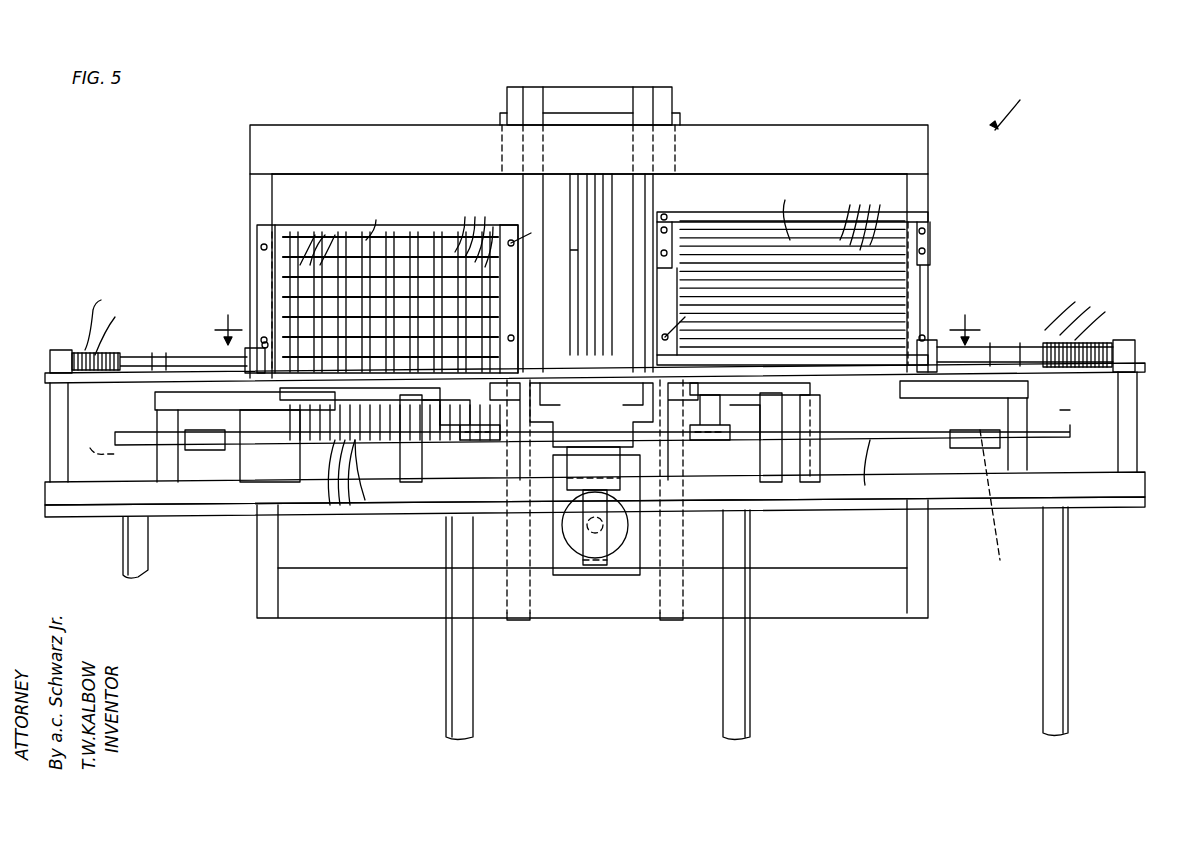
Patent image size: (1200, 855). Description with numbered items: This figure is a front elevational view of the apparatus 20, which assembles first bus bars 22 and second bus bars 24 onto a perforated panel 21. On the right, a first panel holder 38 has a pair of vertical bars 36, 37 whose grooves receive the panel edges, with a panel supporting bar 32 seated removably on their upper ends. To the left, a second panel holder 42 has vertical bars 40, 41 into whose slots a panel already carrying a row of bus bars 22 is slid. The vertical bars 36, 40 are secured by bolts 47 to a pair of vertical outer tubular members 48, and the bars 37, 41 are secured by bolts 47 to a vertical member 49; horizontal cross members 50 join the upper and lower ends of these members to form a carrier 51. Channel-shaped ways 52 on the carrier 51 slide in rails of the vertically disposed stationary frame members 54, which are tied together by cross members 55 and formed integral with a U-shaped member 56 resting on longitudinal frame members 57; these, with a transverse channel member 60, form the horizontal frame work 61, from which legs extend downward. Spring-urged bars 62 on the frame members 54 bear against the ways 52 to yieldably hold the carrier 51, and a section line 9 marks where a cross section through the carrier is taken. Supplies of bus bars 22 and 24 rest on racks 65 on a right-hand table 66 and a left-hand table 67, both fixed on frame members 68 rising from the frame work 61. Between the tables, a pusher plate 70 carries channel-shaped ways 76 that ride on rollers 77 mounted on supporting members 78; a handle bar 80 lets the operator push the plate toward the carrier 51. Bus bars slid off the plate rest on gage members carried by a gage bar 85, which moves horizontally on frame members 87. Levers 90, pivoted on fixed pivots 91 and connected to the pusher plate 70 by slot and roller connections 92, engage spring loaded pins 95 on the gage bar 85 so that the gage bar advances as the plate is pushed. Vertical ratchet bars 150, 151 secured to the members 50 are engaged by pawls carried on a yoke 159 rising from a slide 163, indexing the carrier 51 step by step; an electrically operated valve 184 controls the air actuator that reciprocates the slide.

The section line 9- 9 is at (597, 312).
The apparatus 20 is at (1015, 106).
The perforated panel 21 is at (382, 500).
The first bus bars 22 is at (715, 365).
The second bus bars 24 is at (210, 272).
The bar 32 is at (784, 225).
The vertical bar 36 is at (938, 263).
The vertical bar 37 is at (670, 280).
The first panel holder 38 is at (884, 210).
The vertical bar 40 is at (258, 270).
The vertical bar 41 is at (510, 225).
The second panel holder 42 is at (287, 218).
The bolts 47 is at (261, 247).
The vertical outer tubular members 48 is at (255, 184).
The vertical member 49 is at (500, 185).
The horizontal cross members 50 is at (368, 138).
The carrier 51 is at (792, 115).
The channel-shaped ways 52 is at (500, 112).
The stationary frame members 54 is at (533, 85).
The cross members 55 is at (598, 85).
The U-shaped member 56 is at (580, 385).
The frame members 57 is at (510, 465).
The channel member 60 is at (1090, 500).
The horizontal frame work 61 is at (45, 484).
The bars 62 is at (127, 546).
The rack 65 is at (119, 352).
The table 66 is at (1137, 367).
The table 67 is at (55, 350).
The frame members 68 is at (50, 410).
The pusher plate 70 is at (245, 353).
The channel-shaped ways 76 is at (400, 393).
The roller 77 is at (415, 455).
The supporting member 78 is at (440, 480).
The handle bar 80 is at (710, 413).
The gage bar 85 is at (190, 392).
The horizontal frame members 87 is at (160, 422).
The levers 90 is at (260, 450).
The fixed pivot 91 is at (1082, 434).
The slot and roller connection 92 is at (470, 460).
The spring loaded pins 95 is at (193, 443).
The ratchet bar 150 is at (597, 178).
The ratchet bar 151 is at (575, 178).
The yoke 159 is at (610, 199).
The slide 163 is at (582, 443).
The electrically operated valve 184 is at (615, 540).